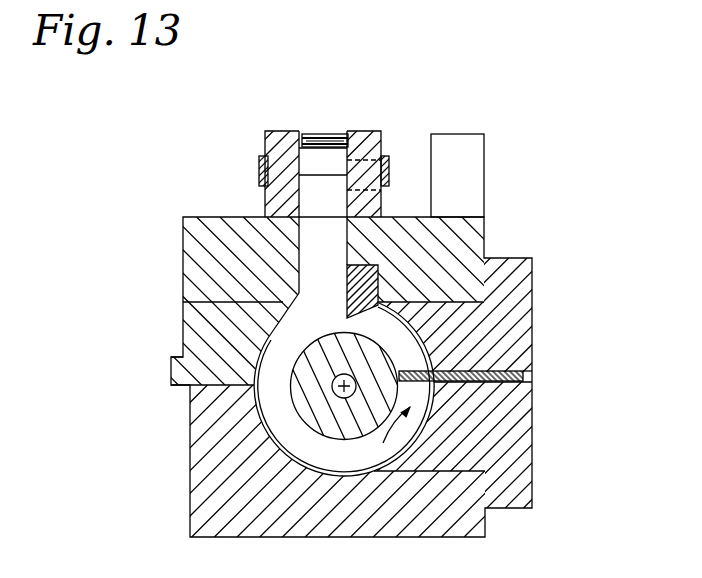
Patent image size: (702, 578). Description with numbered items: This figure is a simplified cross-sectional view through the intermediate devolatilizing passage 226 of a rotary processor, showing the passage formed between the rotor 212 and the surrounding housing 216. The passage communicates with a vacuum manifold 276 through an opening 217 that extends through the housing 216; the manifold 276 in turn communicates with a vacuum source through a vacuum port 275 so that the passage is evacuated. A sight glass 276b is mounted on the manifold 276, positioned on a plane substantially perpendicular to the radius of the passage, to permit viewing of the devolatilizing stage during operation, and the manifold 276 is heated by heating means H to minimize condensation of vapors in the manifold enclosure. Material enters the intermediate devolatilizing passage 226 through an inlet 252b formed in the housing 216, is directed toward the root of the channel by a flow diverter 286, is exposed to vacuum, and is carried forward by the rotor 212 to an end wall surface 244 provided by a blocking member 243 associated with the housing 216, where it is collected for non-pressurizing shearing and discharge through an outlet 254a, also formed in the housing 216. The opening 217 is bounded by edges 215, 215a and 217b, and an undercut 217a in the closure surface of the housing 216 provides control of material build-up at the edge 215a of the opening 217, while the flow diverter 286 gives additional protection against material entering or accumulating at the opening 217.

The rotor 212 is at (328, 426).
The edge of opening 215 is at (343, 287).
The edge of opening 215a is at (293, 291).
The housing 216 is at (190, 486).
The opening 217 is at (267, 218).
The undercut 217a is at (283, 304).
The edge of opening 217b is at (268, 330).
The intermediate devolatilizing passage 226 is at (268, 405).
The blocking member 243 is at (527, 375).
The end wall surface 244 is at (420, 385).
The inlet 252b is at (437, 350).
The outlet 254a is at (436, 420).
The vacuum port 275 is at (390, 160).
The vacuum manifold 276 is at (367, 131).
The sight glass 276b is at (318, 132).
The flow diverter 286 is at (365, 267).
The heating means H is at (258, 172).